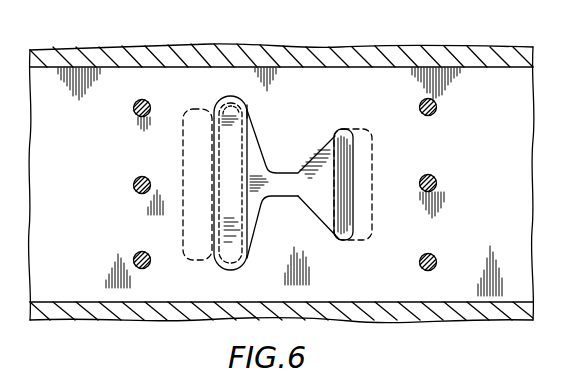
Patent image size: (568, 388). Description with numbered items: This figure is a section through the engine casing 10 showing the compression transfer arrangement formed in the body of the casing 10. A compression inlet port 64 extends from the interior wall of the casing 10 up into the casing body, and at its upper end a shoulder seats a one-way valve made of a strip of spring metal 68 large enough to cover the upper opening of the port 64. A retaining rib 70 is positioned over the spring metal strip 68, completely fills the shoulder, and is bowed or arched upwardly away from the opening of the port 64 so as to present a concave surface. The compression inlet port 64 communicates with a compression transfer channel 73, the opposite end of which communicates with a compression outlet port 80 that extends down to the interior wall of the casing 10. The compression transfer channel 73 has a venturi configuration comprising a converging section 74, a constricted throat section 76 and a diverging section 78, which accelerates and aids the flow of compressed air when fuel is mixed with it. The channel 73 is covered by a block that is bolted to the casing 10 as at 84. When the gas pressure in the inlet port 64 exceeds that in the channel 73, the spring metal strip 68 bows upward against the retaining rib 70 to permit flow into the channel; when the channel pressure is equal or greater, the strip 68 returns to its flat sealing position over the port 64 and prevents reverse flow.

The casing 10 is at (348, 58).
The compression inlet port 64 is at (191, 98).
The retaining rib 70 is at (237, 100).
The spring metal strip 68 is at (246, 111).
The converging section 74 is at (258, 161).
The diverging section 78 is at (323, 153).
The constricted throat section 76 is at (278, 196).
The compression transfer channel 73 is at (310, 205).
The compression outlet port 80 is at (371, 143).
The bolts 84 is at (135, 253).